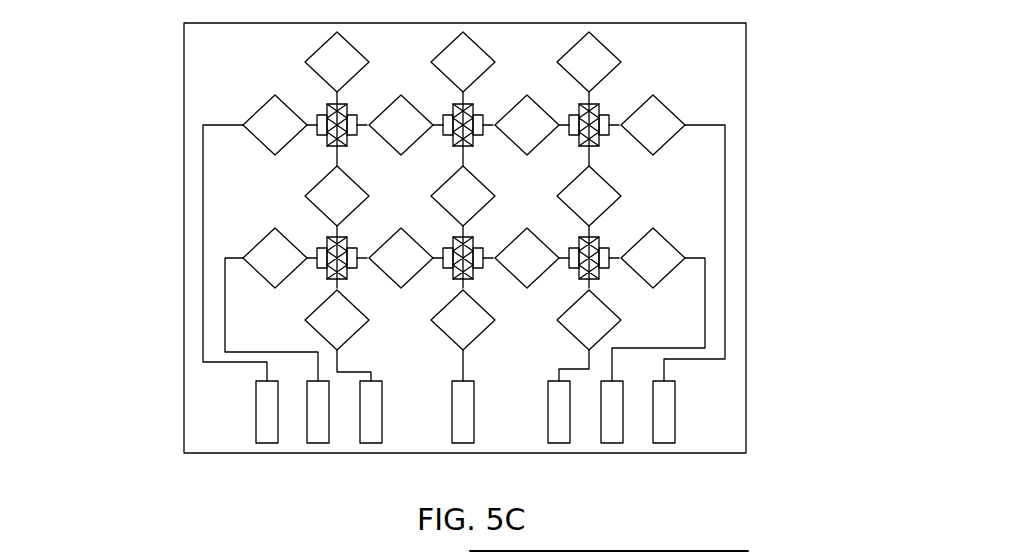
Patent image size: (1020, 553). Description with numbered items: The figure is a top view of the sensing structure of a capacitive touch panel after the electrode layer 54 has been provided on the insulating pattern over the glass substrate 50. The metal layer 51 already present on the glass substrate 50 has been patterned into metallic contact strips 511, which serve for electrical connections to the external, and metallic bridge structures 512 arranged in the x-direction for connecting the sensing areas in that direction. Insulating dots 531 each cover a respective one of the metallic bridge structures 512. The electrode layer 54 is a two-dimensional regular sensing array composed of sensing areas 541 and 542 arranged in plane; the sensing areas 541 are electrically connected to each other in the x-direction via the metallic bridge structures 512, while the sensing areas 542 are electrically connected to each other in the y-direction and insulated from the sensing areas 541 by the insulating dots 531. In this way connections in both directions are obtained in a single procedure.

The glass substrate 50 is at (735, 112).
The electrode layer 54 is at (109, 43).
The sensing areas 541 is at (275, 125).
The sensing areas 542 is at (337, 197).
The insulating dots 531 is at (596, 245).
The metal layer 51 is at (832, 400).
The metallic bridge structures 512 is at (612, 267).
The metallic contact strips 511 is at (665, 420).